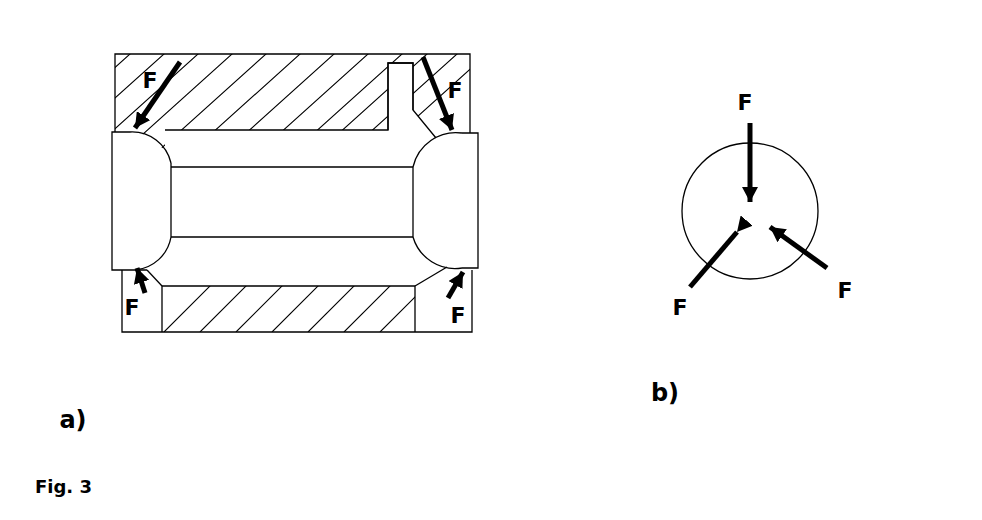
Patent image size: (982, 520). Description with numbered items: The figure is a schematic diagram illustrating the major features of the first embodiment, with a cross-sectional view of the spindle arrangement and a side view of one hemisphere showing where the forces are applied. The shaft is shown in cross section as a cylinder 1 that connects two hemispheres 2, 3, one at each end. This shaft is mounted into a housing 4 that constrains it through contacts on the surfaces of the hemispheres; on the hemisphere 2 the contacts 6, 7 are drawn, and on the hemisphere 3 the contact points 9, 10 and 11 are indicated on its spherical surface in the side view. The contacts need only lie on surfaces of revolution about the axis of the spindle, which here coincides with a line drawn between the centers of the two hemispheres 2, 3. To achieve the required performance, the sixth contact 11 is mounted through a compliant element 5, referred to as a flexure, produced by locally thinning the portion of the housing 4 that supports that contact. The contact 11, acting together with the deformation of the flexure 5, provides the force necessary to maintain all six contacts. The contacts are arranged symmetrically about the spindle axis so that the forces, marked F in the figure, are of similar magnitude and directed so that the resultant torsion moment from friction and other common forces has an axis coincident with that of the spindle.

The cylinder 1 is at (290, 222).
The hemisphere 2 is at (123, 210).
The hemisphere 3 is at (465, 203).
The housing 4 is at (258, 322).
The compliant element (flexure) 5 is at (405, 52).
The contact 6 is at (130, 128).
The contact 7 is at (132, 268).
The contact 9 is at (468, 272).
The contact 10 is at (772, 227).
The sixth contact 11 is at (457, 130).